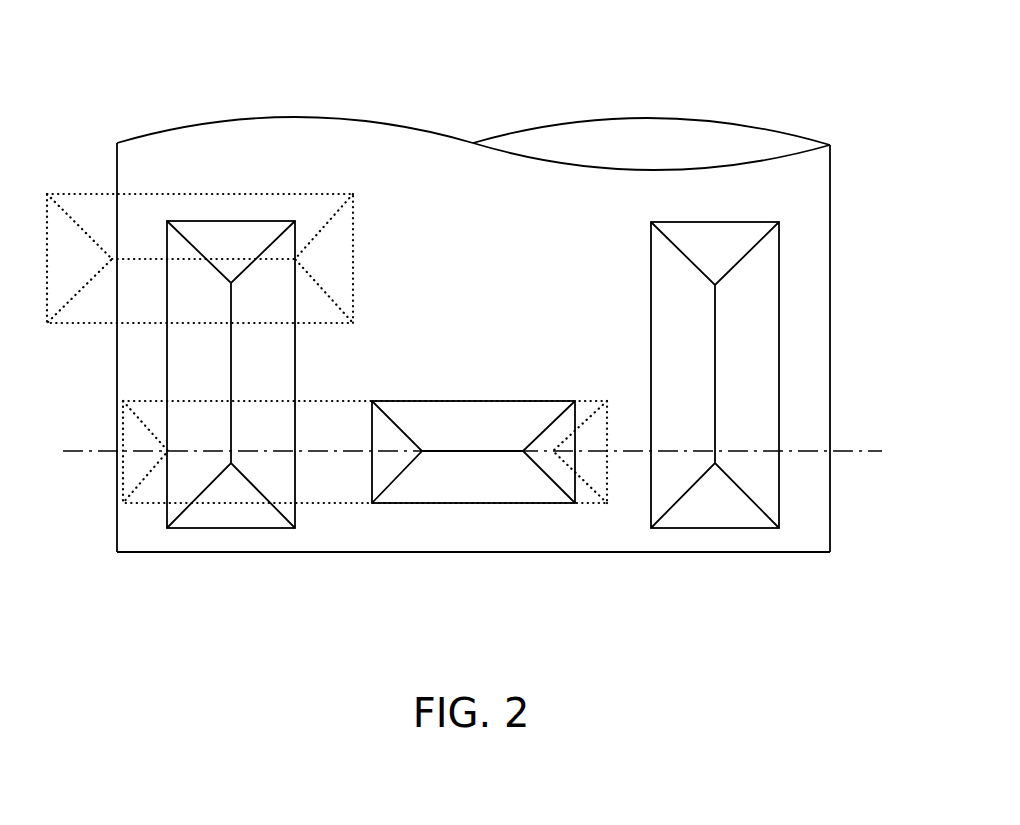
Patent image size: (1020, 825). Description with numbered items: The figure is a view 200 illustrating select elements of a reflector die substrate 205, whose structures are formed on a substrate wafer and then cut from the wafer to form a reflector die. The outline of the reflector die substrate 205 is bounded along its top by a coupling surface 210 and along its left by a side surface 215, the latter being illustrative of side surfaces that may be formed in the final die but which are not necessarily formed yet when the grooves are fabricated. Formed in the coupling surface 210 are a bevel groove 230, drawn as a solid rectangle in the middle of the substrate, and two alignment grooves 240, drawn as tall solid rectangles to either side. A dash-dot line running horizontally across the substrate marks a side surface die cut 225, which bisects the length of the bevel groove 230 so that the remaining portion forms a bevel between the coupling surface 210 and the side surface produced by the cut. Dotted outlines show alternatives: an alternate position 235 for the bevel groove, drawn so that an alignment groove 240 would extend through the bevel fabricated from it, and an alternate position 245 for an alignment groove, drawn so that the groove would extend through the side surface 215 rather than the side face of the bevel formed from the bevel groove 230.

The view 200 is at (756, 94).
The reflector die substrate 205 is at (445, 297).
The coupling surface 210 is at (458, 165).
The side surface 215 is at (112, 380).
The side surface die cut 225 is at (85, 459).
The bevel groove 230 is at (452, 448).
The alternate position for a bevel groove 235 is at (316, 508).
The alignment grooves 240 is at (672, 372).
The alternate position for an alignment groove 245 is at (334, 190).